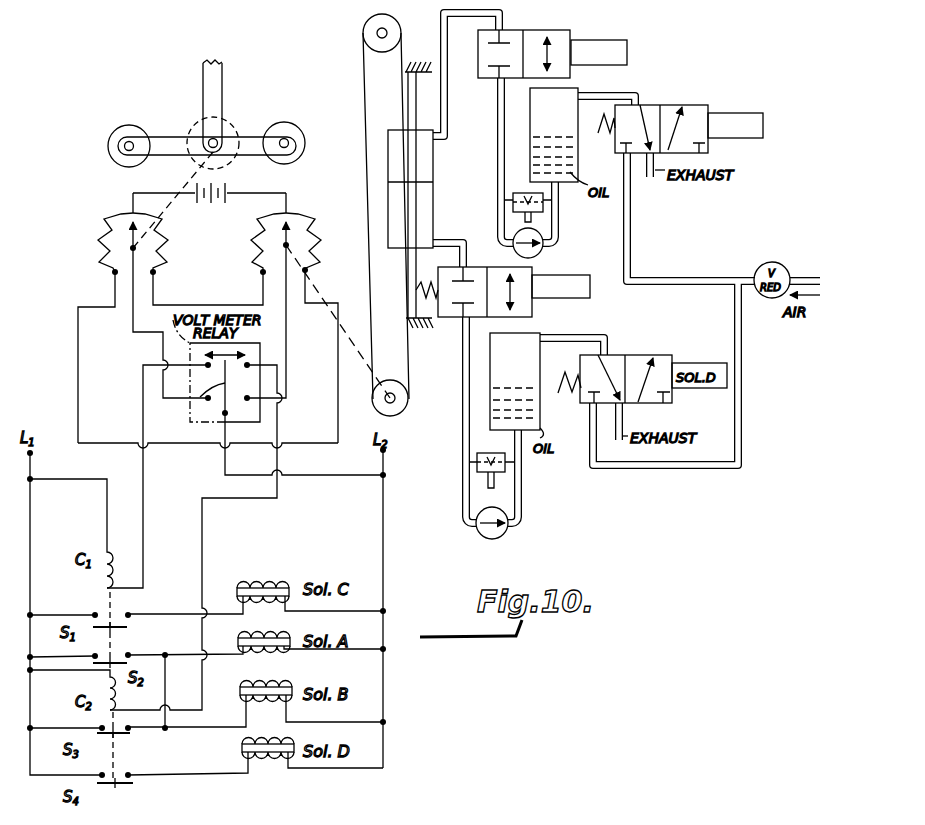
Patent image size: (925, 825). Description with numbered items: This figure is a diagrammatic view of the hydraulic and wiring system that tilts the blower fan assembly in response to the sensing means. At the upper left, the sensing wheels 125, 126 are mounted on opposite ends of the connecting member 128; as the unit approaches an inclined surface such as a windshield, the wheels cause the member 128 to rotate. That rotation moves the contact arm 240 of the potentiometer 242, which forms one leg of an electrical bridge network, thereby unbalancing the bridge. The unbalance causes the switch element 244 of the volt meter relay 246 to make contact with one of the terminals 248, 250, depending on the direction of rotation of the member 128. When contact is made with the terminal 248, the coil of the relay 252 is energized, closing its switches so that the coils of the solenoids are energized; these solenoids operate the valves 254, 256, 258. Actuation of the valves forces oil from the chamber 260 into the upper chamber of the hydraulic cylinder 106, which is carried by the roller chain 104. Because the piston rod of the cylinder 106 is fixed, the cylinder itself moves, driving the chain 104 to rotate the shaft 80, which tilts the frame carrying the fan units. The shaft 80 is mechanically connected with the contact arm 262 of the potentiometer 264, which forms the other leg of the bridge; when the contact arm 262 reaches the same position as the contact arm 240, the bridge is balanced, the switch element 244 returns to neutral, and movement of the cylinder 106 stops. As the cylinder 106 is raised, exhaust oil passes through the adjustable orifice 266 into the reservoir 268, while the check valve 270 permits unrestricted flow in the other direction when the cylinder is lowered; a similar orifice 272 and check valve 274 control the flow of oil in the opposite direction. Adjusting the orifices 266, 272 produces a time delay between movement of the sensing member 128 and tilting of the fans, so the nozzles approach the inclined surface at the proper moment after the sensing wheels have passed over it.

The shaft 80 is at (410, 402).
The roller chain 104 is at (365, 177).
The hydraulic cylinder 106 is at (437, 165).
The sensing wheel 125 is at (287, 122).
The sensing wheel 126 is at (127, 126).
The connecting member 128 is at (245, 133).
The contact arm 240 is at (130, 237).
The potentiometer 242 is at (100, 223).
The switch element 244 is at (198, 398).
The volt meter relay 246 is at (262, 352).
The terminal 248 is at (205, 366).
The terminal 250 is at (250, 364).
The relay 252 is at (132, 612).
The valve 254 is at (558, 31).
The valve 256 is at (532, 308).
The valve 258 is at (688, 105).
The chamber 260 is at (578, 157).
The contact arm 262 is at (292, 238).
The potentiometer 264 is at (320, 252).
The adjustable orifice 266 is at (477, 457).
The reservoir 268 is at (540, 408).
The check valve 270 is at (485, 543).
The orifice 272 is at (543, 208).
The check valve 274 is at (550, 255).